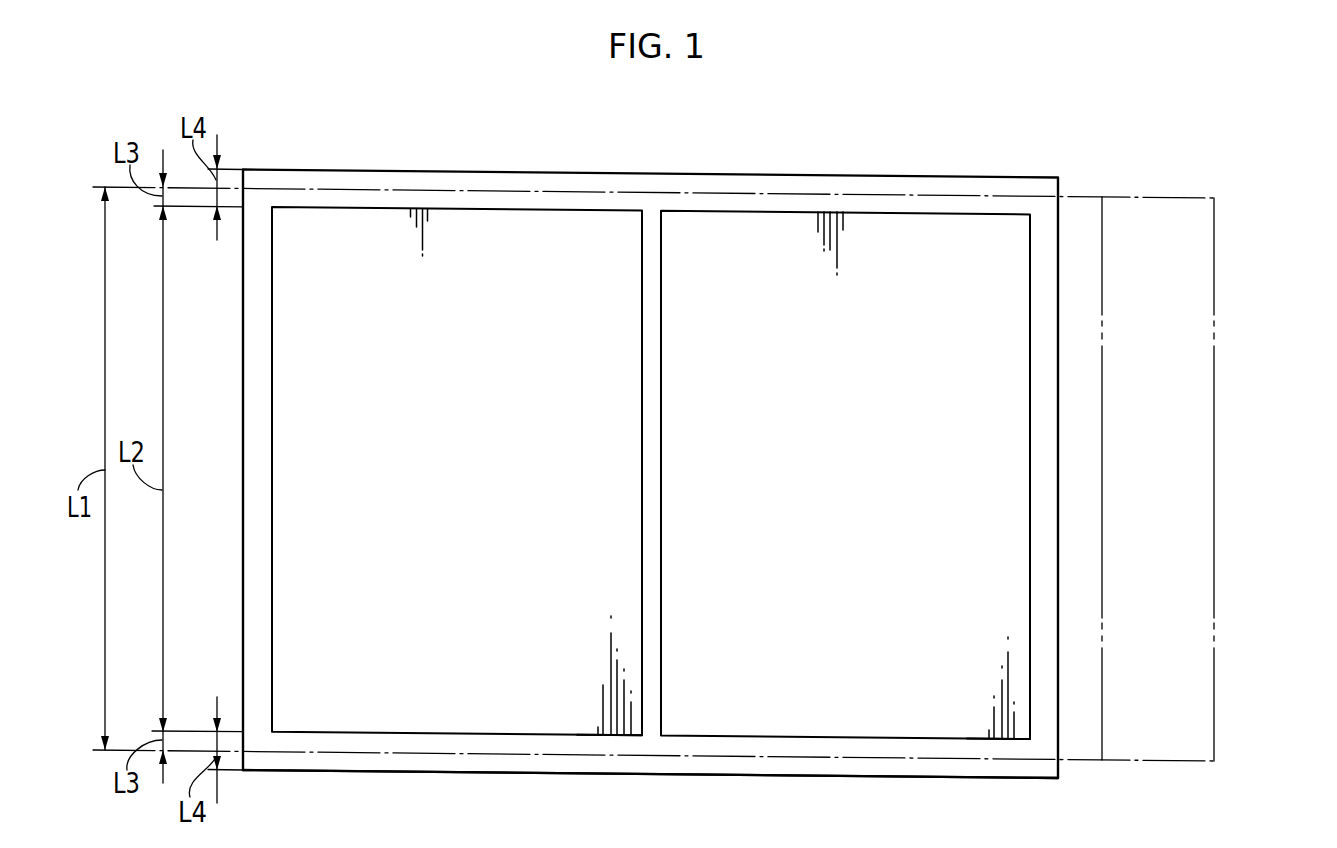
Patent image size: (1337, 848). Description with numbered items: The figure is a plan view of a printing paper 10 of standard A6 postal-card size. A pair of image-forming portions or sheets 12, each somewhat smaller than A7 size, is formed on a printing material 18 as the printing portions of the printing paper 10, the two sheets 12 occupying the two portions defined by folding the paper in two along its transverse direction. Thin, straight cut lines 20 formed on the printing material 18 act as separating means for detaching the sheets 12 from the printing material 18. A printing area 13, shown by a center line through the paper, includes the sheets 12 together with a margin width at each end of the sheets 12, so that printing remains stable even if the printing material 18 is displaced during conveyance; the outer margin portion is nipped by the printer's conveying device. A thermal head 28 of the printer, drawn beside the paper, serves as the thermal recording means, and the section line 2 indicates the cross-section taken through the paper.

The section line 2- 2 is at (780, 161).
The printing paper 10 is at (966, 166).
The image-forming portion 12 is at (470, 748).
The printing area 13 is at (445, 188).
The printing material 18 is at (360, 764).
The cut line 20 is at (577, 736).
The thermal head 28 is at (1214, 652).